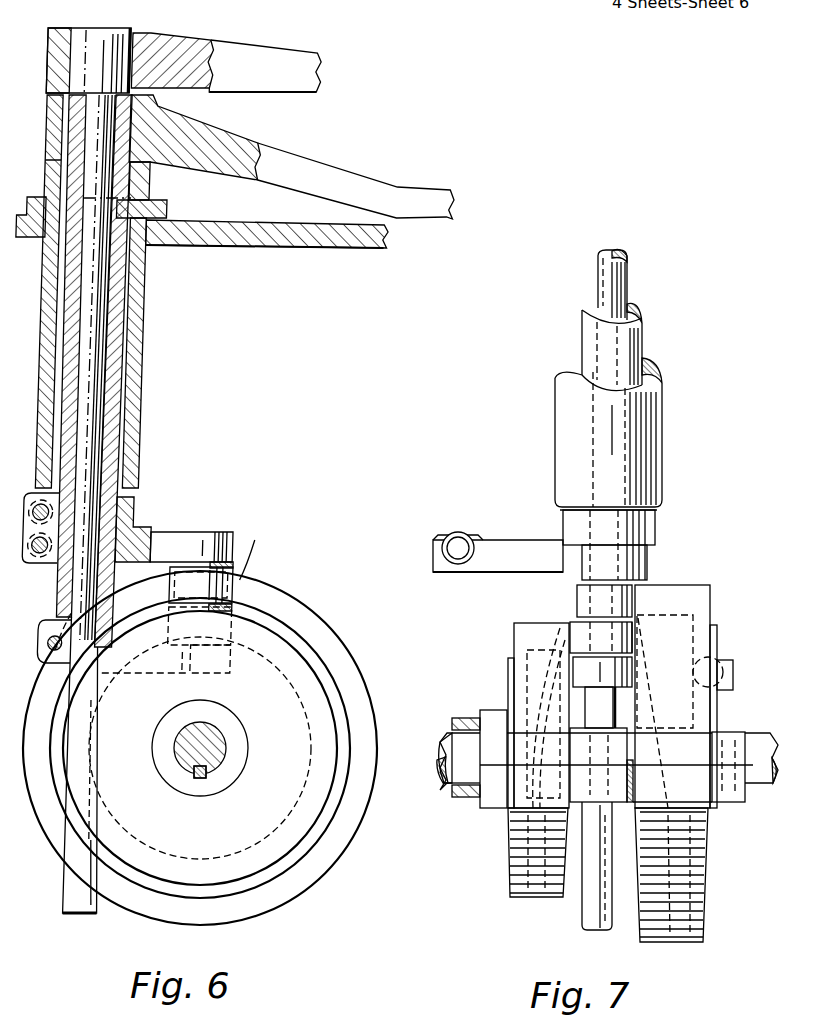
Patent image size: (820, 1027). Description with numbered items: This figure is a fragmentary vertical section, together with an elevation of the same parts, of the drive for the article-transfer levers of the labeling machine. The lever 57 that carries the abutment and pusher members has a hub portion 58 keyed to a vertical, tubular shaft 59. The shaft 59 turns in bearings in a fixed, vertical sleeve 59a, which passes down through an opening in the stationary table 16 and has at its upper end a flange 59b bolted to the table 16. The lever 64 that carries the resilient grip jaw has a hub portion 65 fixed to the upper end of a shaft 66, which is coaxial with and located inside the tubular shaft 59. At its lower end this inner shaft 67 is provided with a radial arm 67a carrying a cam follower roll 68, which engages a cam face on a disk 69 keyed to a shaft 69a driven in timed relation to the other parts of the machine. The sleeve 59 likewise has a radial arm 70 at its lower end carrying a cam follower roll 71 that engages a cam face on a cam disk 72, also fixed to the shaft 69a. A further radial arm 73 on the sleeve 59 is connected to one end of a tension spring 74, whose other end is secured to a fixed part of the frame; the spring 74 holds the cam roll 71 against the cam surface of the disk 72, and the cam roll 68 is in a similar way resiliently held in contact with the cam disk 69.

In FIG. 6, the stationary table 16 is at (329, 250).
In FIG. 6, the lever 57 is at (315, 170).
In FIG. 6, the hub portion 58 is at (143, 103).
In FIG. 6, the tubular shaft 59 is at (115, 308).
In FIG. 7, the tubular shaft 59 is at (622, 345).
In FIG. 6, the fixed vertical sleeve 59a is at (144, 362).
In FIG. 7, the fixed vertical sleeve 59a is at (650, 408).
In FIG. 6, the flange 59b is at (161, 210).
In FIG. 6, the lever 64 is at (305, 68).
In FIG. 6, the hub portion 65 is at (142, 33).
In FIG. 6, the shaft 66 is at (62, 65).
In FIG. 6, the shaft 67 is at (97, 285).
In FIG. 7, the shaft 67 is at (612, 288).
In FIG. 6, the radial arm 67a is at (168, 663).
In FIG. 6, the cam follower roll 68 is at (231, 600).
In FIG. 7, the cam follower roll 68 is at (572, 633).
In FIG. 6, the cam disk 69 is at (313, 667).
In FIG. 7, the cam disk 69 is at (540, 903).
In FIG. 6, the shaft 69a is at (217, 770).
In FIG. 7, the shaft 69a is at (758, 745).
In FIG. 6, the radial arm 70 is at (164, 535).
In FIG. 7, the radial arm 70 is at (640, 562).
In FIG. 6, the cam follower roll 71 is at (259, 540).
In FIG. 7, the cam follower roll 71 is at (578, 600).
In FIG. 6, the cam disk 72 is at (355, 702).
In FIG. 7, the cam disk 72 is at (678, 592).
In FIG. 7, the radial arm 73 is at (503, 540).
In FIG. 7, the tension spring 74 is at (455, 532).